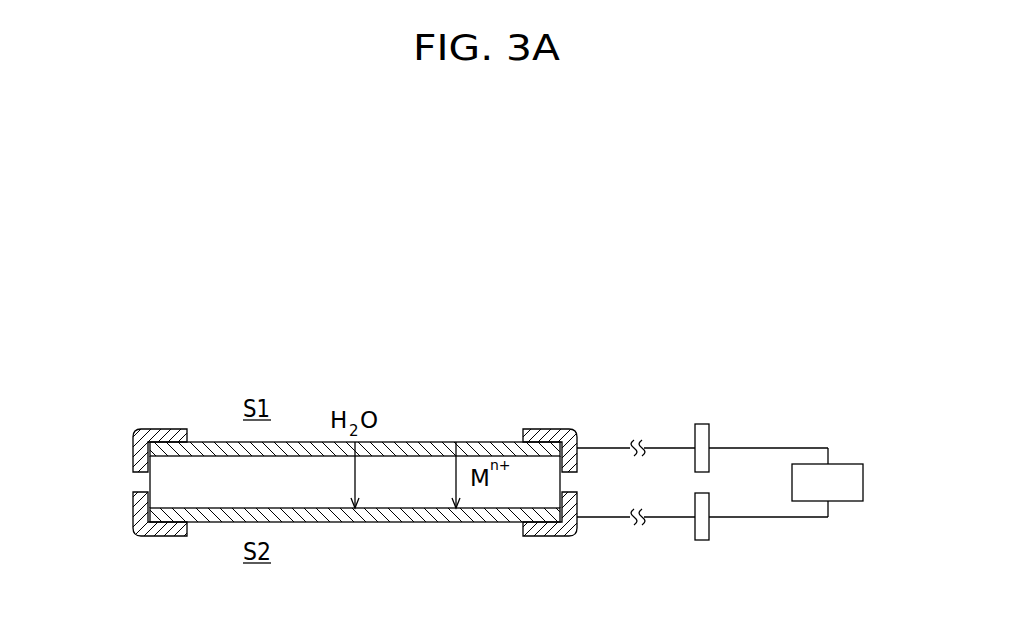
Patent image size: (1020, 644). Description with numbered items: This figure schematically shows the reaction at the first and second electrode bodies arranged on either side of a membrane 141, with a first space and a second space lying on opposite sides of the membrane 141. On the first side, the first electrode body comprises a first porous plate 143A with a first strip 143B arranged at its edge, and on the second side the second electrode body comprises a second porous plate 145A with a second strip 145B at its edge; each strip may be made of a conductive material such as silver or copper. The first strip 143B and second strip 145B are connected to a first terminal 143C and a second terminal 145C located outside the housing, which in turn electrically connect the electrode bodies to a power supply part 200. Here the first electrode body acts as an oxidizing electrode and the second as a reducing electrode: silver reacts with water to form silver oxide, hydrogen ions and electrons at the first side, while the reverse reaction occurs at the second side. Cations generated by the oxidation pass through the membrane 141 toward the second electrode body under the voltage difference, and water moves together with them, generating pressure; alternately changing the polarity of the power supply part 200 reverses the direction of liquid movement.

The membrane 141 is at (158, 482).
The first porous plate 143A is at (481, 430).
The first strip 143B is at (557, 430).
The first terminal 143C is at (702, 424).
The second porous plate 145A is at (480, 535).
The second strip 145B is at (556, 537).
The second terminal 145C is at (700, 541).
The power supply part 200 is at (863, 482).